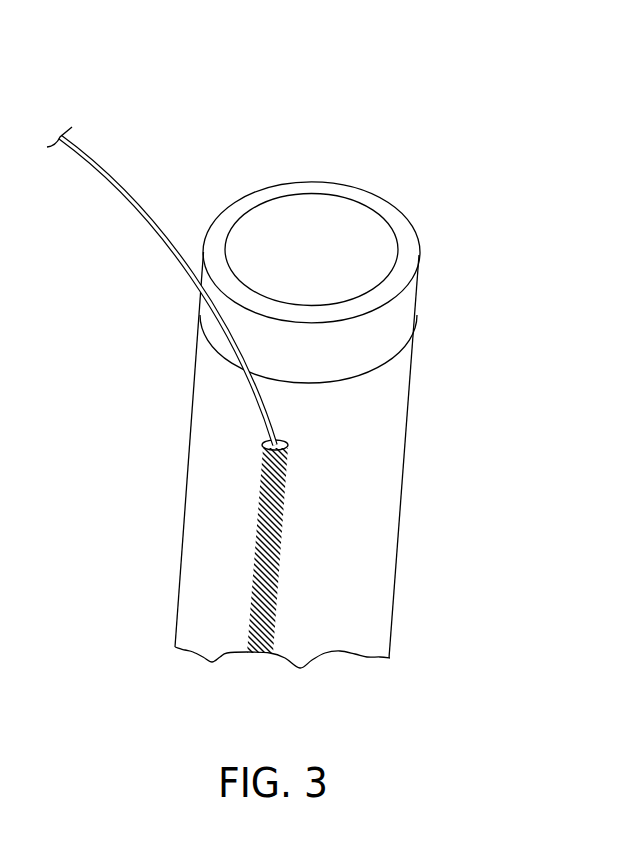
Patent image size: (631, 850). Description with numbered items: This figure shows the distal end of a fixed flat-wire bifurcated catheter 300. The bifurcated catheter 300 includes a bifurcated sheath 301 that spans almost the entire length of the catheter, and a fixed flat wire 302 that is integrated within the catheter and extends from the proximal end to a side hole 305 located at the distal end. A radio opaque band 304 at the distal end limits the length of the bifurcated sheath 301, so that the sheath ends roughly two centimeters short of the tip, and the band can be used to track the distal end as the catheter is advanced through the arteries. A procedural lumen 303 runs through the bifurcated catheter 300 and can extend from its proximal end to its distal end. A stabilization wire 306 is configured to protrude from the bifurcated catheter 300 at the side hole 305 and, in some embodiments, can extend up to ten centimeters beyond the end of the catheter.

The bifurcated catheter 300 is at (408, 98).
The bifurcated sheath 301 is at (394, 582).
The fixed flat wire 302 is at (250, 627).
The procedural lumen 303 is at (357, 258).
The radio opaque band 304 is at (368, 335).
The side hole 305 is at (262, 445).
The stabilization wire 306 is at (222, 323).